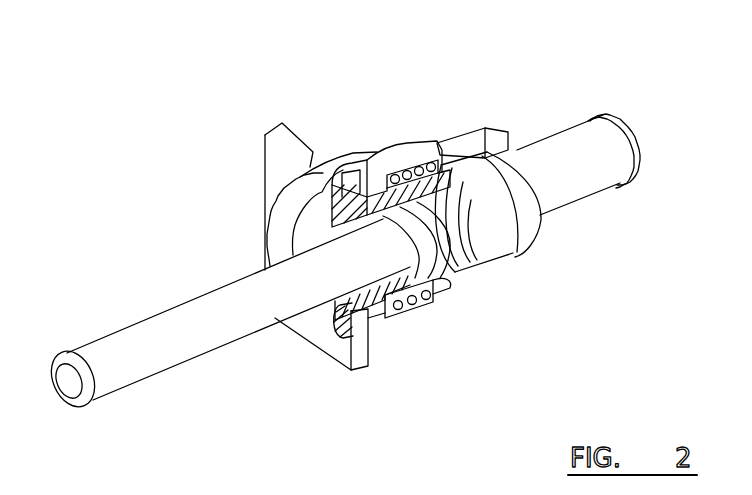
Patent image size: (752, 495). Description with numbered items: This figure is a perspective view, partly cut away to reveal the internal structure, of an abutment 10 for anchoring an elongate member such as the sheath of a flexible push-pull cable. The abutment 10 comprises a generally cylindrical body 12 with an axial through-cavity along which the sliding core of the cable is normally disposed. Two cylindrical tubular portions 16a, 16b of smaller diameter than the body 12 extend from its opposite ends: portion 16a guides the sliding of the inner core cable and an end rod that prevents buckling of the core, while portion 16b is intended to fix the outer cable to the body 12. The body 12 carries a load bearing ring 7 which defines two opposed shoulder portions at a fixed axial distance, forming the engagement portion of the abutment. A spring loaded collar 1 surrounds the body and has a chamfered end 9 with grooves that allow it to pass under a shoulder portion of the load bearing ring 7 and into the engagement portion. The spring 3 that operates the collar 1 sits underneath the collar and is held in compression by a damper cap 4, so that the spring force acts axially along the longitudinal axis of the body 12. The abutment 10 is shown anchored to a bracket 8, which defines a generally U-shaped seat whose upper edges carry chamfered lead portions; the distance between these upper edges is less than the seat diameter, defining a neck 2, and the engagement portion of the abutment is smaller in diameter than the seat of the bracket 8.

The spring loaded collar 1 is at (400, 127).
The neck 2 is at (300, 165).
The spring 3 is at (430, 312).
The damper cap 4 is at (460, 127).
The load bearing ring 7 is at (362, 150).
The bracket 8 is at (305, 333).
The chamfered end 9 is at (331, 165).
The abutment 10 is at (524, 113).
The cylindrical body 12 is at (474, 284).
The cylindrical tubular portion 16a is at (180, 328).
The cylindrical tubular portion 16b is at (587, 172).